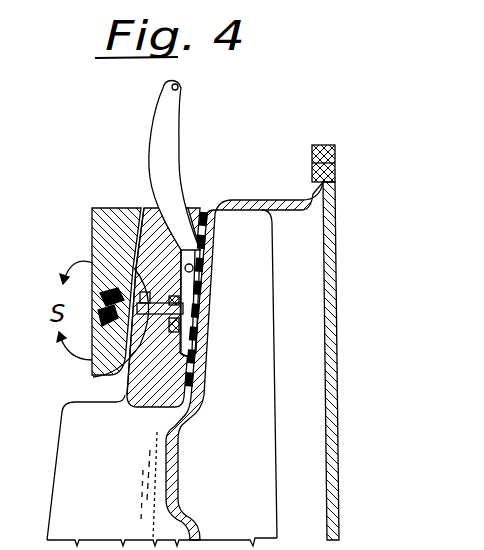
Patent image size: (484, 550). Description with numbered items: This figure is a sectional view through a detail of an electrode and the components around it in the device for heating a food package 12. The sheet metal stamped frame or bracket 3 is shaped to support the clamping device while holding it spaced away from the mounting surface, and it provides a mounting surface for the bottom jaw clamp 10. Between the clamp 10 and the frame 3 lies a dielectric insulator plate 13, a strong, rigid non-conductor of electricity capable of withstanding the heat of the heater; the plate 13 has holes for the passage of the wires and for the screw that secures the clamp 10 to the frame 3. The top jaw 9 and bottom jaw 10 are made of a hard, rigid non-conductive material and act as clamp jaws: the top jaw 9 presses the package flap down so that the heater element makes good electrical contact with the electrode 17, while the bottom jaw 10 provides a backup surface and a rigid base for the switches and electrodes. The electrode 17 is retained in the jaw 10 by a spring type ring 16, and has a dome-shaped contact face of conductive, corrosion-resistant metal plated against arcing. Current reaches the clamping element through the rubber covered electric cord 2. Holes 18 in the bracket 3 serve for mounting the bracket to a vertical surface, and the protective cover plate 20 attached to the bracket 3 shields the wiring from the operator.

The electric cord 2 is at (159, 113).
The sheet metal frame or bracket 3 is at (286, 206).
The top jaw clamp 9 is at (106, 220).
The bottom jaw clamp 10 is at (130, 387).
The food package 12 is at (66, 436).
The dielectric insulator plate 13 is at (212, 210).
The spring type ring 16 is at (186, 303).
The electrode 17 is at (183, 328).
The mounting holes 18 is at (331, 171).
The protective cover plate 20 is at (335, 273).